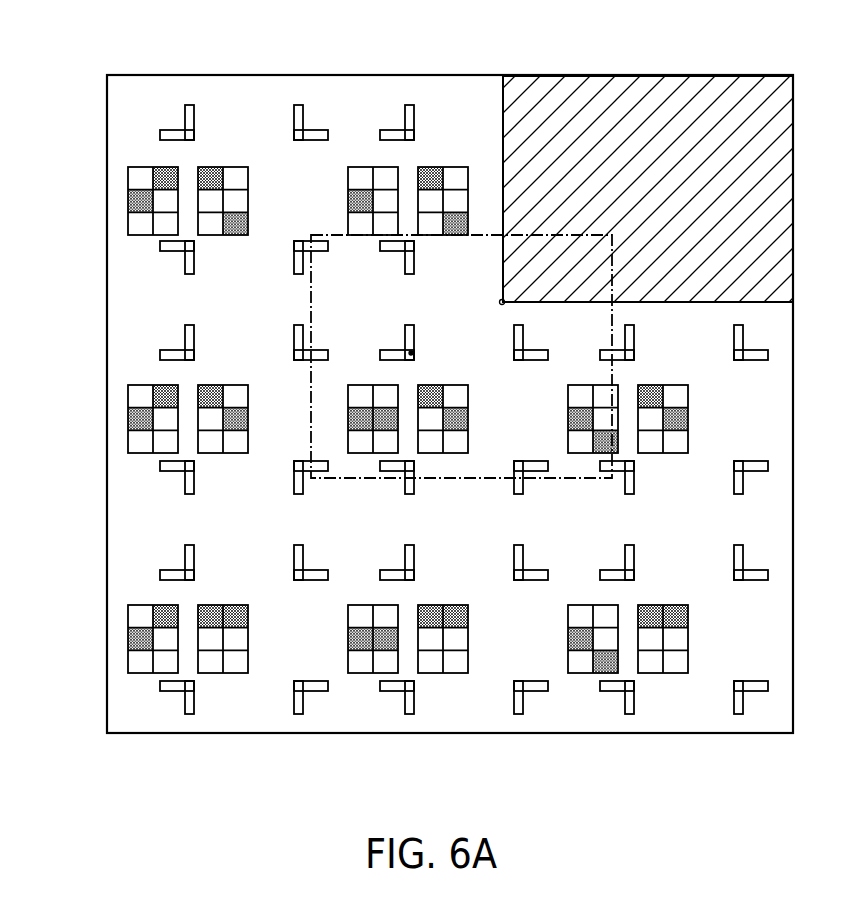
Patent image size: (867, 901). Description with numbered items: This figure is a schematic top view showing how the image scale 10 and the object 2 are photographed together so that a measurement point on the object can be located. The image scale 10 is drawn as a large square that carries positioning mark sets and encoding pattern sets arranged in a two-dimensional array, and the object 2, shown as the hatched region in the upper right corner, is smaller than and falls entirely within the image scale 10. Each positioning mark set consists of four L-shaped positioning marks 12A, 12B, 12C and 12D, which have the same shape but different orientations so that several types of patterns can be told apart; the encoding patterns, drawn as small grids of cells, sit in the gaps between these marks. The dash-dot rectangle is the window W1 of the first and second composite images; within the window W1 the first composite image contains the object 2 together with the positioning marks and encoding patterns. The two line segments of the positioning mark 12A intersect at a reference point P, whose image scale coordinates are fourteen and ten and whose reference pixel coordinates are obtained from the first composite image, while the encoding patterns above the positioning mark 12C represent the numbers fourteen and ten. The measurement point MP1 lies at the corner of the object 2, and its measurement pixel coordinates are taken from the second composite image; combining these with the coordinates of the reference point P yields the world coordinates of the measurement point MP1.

The image scale 10 is at (232, 125).
The object 2 is at (693, 120).
The window W1 is at (311, 302).
The positioning mark 12A is at (410, 352).
The positioning mark 12B is at (514, 343).
The positioning mark 12C is at (404, 488).
The positioning mark 12D is at (522, 483).
The measurement point MP1 is at (499, 302).
The reference point P is at (413, 353).